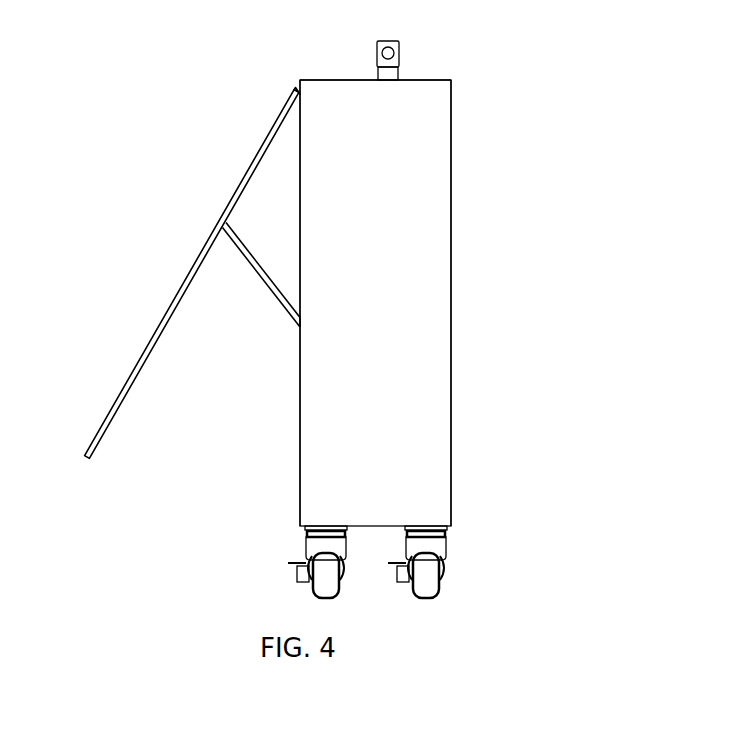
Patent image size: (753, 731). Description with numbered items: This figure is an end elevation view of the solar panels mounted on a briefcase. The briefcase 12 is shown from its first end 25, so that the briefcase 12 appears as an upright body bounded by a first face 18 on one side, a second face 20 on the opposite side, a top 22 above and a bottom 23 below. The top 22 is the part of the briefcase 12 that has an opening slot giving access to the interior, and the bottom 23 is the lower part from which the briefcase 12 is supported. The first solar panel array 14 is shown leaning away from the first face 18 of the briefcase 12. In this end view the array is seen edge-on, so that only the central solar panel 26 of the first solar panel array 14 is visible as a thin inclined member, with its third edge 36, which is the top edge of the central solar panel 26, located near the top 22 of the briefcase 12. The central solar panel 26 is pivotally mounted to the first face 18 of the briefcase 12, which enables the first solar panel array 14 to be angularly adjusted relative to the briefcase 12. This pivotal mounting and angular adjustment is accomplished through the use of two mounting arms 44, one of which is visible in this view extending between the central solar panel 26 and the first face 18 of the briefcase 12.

The briefcase 12 is at (554, 121).
The first solar panel array 14 is at (145, 215).
The first face 18 is at (286, 438).
The second face 20 is at (464, 287).
The top 22 is at (443, 73).
The bottom 23 is at (385, 543).
The first end 25 is at (439, 225).
The central solar panel 26 is at (262, 114).
The third edge 36 is at (292, 75).
The mounting arms 44 is at (247, 284).